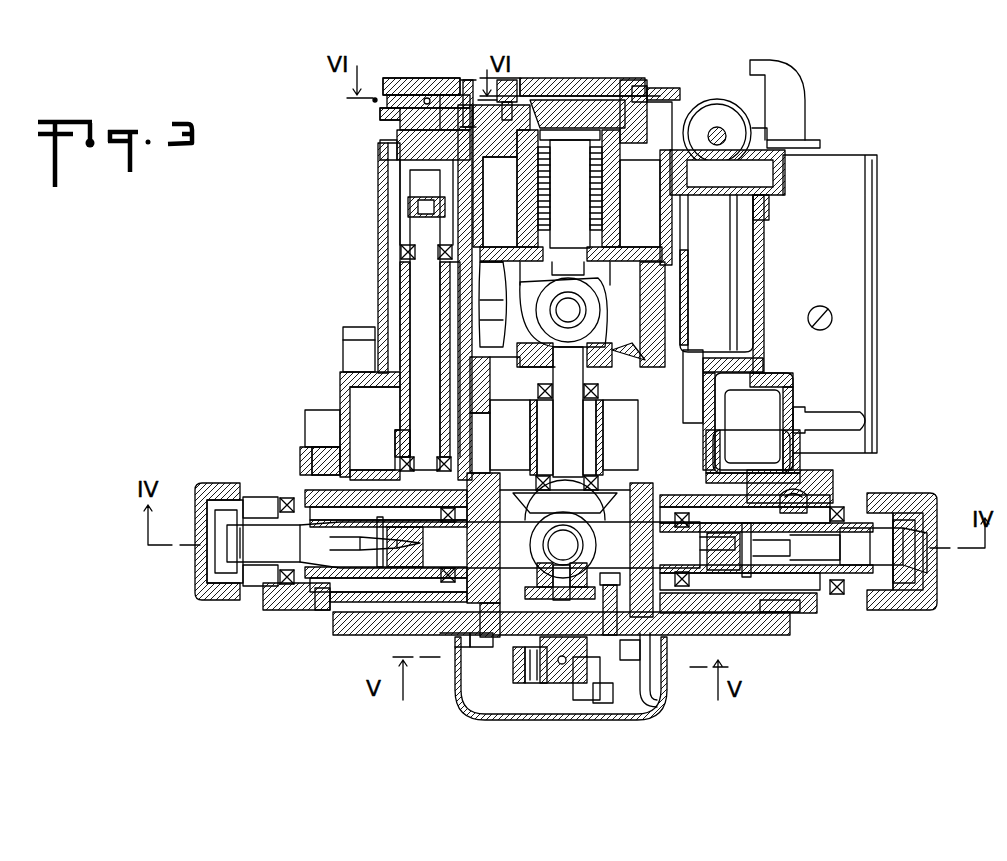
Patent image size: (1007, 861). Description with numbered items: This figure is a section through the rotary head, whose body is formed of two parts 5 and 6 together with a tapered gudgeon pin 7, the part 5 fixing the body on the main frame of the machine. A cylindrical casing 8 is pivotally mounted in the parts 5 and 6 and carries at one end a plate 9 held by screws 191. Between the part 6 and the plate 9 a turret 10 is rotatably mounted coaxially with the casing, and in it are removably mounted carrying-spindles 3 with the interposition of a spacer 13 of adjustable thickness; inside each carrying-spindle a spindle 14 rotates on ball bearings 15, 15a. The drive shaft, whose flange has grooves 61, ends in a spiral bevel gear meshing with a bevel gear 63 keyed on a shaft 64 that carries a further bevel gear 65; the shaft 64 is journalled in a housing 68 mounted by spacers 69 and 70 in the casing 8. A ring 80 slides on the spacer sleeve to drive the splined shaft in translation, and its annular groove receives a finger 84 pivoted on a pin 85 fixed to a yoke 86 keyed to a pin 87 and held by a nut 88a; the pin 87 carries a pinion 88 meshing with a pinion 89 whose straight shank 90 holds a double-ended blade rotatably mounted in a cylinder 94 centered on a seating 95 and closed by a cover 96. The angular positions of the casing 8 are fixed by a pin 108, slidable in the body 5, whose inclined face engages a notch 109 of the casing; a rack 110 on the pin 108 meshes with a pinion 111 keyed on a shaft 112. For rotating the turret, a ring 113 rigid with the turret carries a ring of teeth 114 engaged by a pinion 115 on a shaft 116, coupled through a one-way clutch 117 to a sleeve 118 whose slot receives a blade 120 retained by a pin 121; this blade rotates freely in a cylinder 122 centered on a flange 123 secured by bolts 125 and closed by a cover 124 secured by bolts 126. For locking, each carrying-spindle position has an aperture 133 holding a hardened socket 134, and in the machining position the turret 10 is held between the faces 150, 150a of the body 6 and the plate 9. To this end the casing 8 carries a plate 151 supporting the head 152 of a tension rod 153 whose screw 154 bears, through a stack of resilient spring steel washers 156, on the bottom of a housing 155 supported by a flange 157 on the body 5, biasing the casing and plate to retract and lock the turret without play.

The carrying-spindle 3 is at (284, 603).
The body part 5 is at (764, 221).
The body part 6 is at (793, 384).
The tapered gudgeon pin 7 is at (717, 359).
The cylindrical casing 8 is at (660, 357).
The plate 9 is at (770, 637).
The turret 10 is at (835, 478).
The spacer 13 is at (318, 608).
The spindle 14 is at (243, 498).
The ball bearing 15 is at (290, 496).
The ball bearing 15a is at (447, 582).
The grooves 61 is at (610, 298).
The bevel gear 63 is at (642, 378).
The shaft 64 is at (568, 412).
The bevel gear 65 is at (563, 495).
The housing 68 is at (600, 456).
The spacer 69 is at (508, 465).
The spacer 70 is at (505, 398).
The ring 80 is at (542, 531).
The finger 84 is at (540, 578).
The pin 85 is at (563, 594).
The yoke 86 is at (602, 593).
The pin 87 is at (637, 665).
The pinion 88 is at (612, 620).
The nut 88a is at (622, 585).
The pinion 89 is at (553, 642).
The straight shank 90 is at (575, 665).
The cylinder 94 is at (607, 662).
The seating 95 is at (528, 655).
The cover 96 is at (537, 682).
The pin 108 is at (720, 175).
The notch 109 is at (660, 128).
The rack 110 is at (760, 140).
The pinion 111 is at (710, 118).
The shaft 112 is at (720, 128).
The ring 113 is at (716, 432).
The ring of teeth 114 is at (690, 485).
The pinion 115 is at (423, 466).
The shaft 116 is at (425, 282).
The one-way clutch 117 is at (406, 208).
The sleeve 118 is at (422, 138).
The blade 120 is at (446, 95).
The pin 121 is at (426, 97).
The cylinder 122 is at (387, 102).
The flange 123 is at (382, 116).
The cover 124 is at (395, 80).
The bolt 125 is at (504, 100).
The bolt 126 is at (470, 80).
The aperture 133 is at (887, 498).
The socket 134 is at (805, 490).
The face 150 is at (748, 468).
The face 150a is at (785, 631).
The plate 151 is at (628, 256).
The head 152 is at (568, 275).
The tension rod 153 is at (570, 189).
The screw 154 is at (597, 80).
The housing 155 is at (622, 216).
The resilient spring steel washers 156 is at (537, 212).
The flange 157 is at (655, 86).
The screws 191 is at (480, 645).